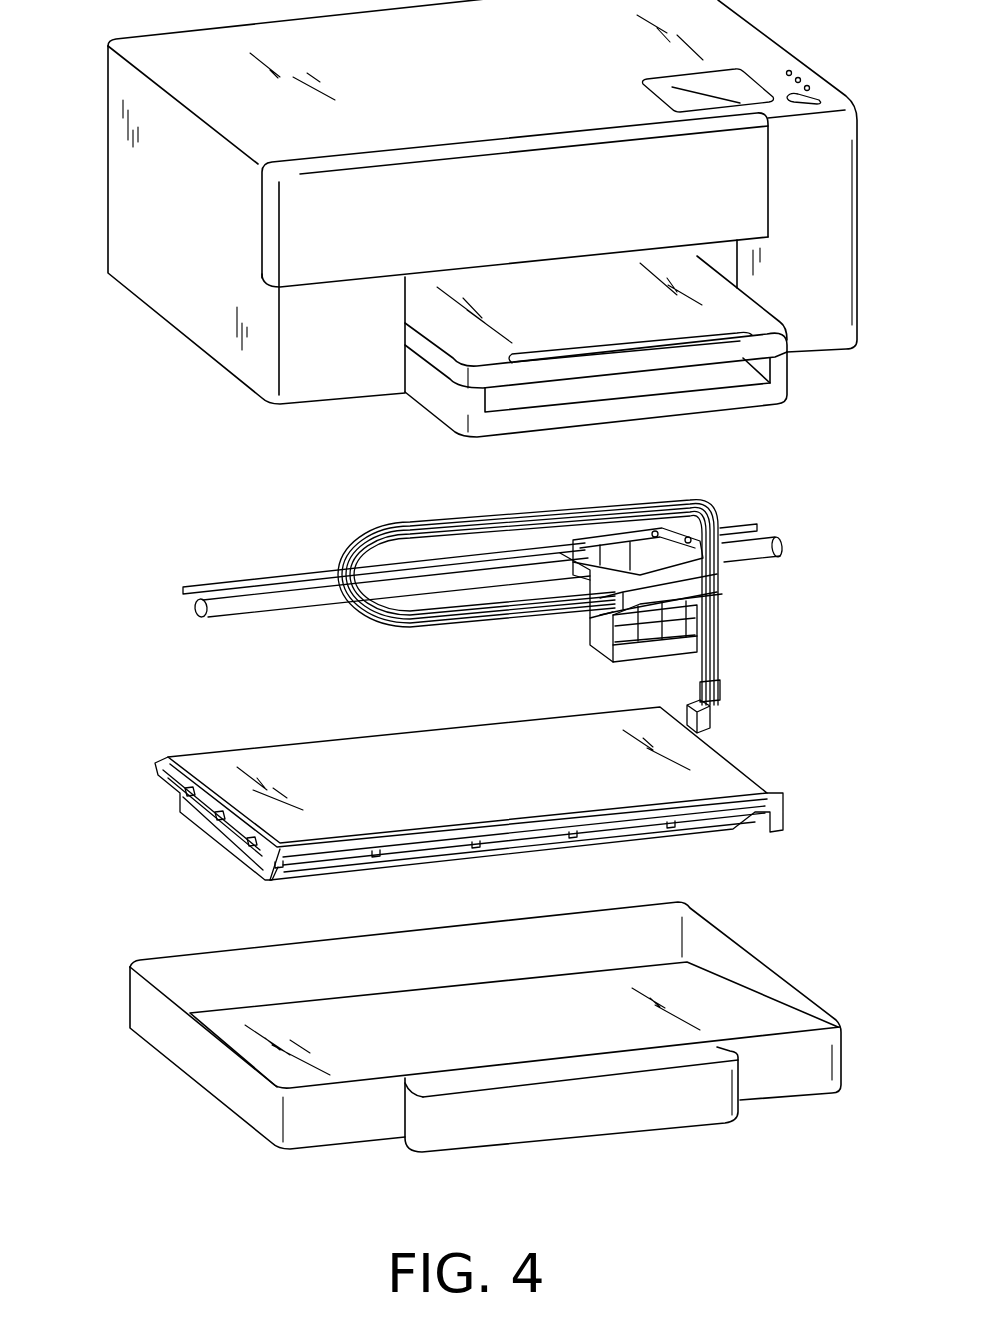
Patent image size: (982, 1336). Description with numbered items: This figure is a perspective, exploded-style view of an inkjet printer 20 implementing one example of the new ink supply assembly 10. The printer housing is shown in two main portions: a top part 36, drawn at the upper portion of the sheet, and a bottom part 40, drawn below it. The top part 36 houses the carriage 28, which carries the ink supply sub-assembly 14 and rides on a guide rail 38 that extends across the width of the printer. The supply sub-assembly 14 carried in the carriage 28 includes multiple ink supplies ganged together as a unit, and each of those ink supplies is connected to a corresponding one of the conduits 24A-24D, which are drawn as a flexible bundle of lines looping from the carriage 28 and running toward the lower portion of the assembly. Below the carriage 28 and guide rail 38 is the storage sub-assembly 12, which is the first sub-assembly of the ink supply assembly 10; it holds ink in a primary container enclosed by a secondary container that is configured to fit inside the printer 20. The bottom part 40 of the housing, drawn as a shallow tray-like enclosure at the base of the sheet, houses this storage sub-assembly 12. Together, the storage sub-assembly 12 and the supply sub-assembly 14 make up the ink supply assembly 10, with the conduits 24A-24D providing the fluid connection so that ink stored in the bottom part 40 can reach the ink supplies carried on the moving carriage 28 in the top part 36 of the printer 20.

The ink supply assembly 10 is at (810, 652).
The storage sub-assembly 12 is at (742, 748).
The supply sub-assembly 14 is at (728, 584).
The printer 20 is at (78, 18).
The conduits 24A-24D is at (418, 535).
The carriage 28 is at (585, 627).
The top part 36 is at (833, 333).
The guide rail 38 is at (242, 605).
The bottom part 40 is at (810, 1080).